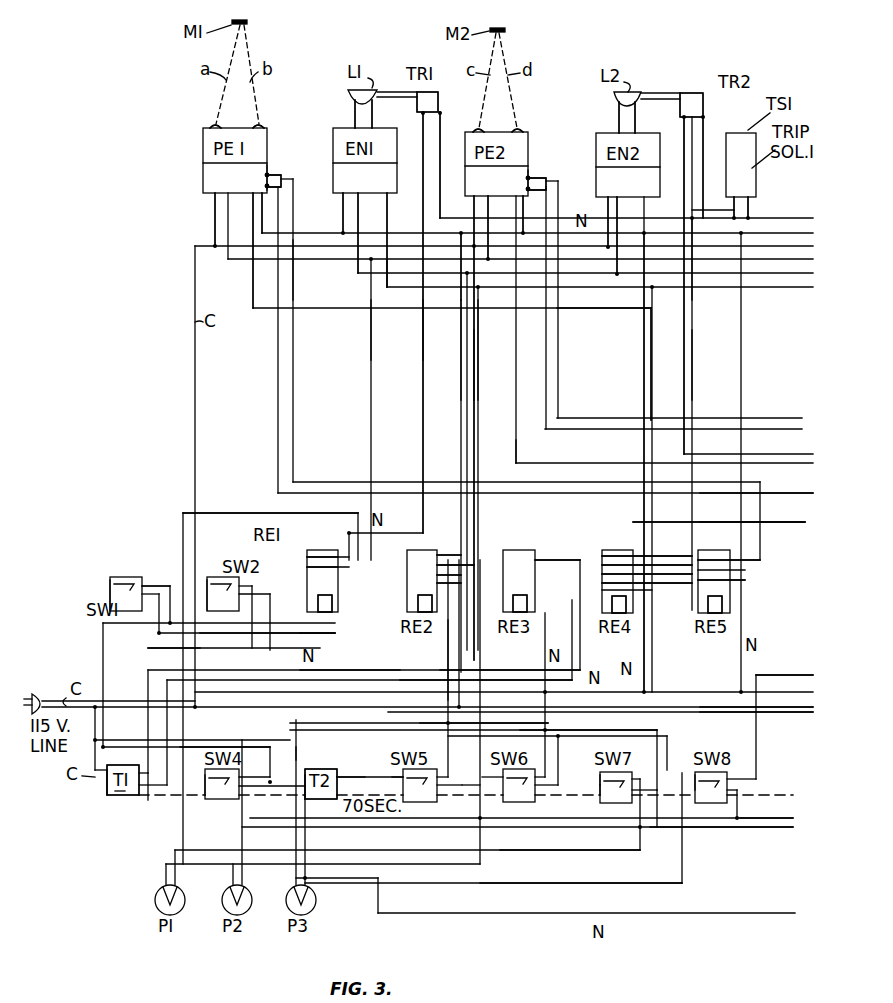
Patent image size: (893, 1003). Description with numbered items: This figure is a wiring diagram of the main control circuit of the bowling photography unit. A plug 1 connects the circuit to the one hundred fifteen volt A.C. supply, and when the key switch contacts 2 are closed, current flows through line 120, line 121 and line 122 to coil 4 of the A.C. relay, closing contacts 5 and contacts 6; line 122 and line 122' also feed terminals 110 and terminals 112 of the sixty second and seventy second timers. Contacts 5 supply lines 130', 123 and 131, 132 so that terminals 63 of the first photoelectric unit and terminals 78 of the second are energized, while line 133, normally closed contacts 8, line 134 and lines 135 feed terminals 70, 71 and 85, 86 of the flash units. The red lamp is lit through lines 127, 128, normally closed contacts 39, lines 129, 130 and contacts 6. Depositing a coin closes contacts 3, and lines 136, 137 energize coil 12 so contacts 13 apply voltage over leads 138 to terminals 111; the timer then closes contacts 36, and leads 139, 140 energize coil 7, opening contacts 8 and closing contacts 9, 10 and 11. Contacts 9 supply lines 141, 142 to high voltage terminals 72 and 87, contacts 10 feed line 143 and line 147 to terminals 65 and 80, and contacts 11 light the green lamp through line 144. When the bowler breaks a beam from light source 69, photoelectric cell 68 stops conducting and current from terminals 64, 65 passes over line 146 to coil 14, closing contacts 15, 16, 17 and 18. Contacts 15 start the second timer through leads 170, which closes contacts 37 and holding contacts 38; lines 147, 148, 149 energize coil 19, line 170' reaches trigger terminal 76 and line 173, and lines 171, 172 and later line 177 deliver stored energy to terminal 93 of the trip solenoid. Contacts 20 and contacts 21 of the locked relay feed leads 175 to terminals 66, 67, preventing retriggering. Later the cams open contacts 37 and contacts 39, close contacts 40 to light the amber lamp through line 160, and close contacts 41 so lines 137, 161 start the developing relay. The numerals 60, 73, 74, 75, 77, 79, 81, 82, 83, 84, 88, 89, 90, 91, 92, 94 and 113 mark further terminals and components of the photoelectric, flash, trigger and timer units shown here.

The plug 1 is at (33, 700).
The contacts 2 is at (110, 585).
The contacts 3 is at (207, 585).
The relay coil 4 is at (318, 603).
The contacts 5 is at (315, 570).
The contacts 6 is at (315, 558).
The relay coil 7 is at (415, 602).
The contacts 8 is at (420, 575).
The contacts 9 is at (420, 583).
The contacts 10 is at (420, 562).
The contacts 11 is at (418, 556).
The relay coil 12 is at (527, 602).
The contacts 13 is at (503, 560).
The relay coil 14 is at (605, 612).
The contacts 15 is at (602, 580).
The contacts 16 is at (602, 572).
The contacts 17 is at (602, 565).
The contacts 18 is at (602, 557).
The relay coil 19 is at (702, 614).
The contacts 20 is at (698, 580).
The contacts 21 is at (698, 560).
The contacts 36 is at (205, 780).
The contacts 37 is at (403, 777).
The contacts 38 is at (503, 777).
The contacts 39 is at (600, 790).
The contacts 40 is at (600, 778).
The contacts 41 is at (695, 779).
The timer period 60 is at (130, 795).
The terminals 63 is at (215, 201).
The terminal 64 is at (253, 197).
The terminal 65 is at (262, 198).
The terminal 66 is at (283, 180).
The terminal 67 is at (270, 173).
The photoelectric cell 68 is at (262, 126).
The light source 69 is at (212, 126).
The terminal 70 is at (343, 203).
The terminal 71 is at (358, 216).
The terminal 72 is at (387, 216).
The lamp lead 73 is at (355, 110).
The lamp lead 74 is at (372, 114).
The terminal 75 is at (417, 97).
The terminal 76 is at (423, 120).
The transformer lead 77 is at (442, 126).
The terminals 78 is at (474, 204).
The photocell lead 79 is at (505, 200).
The terminal 80 is at (524, 200).
The photocell terminal 81 is at (546, 184).
The photocell terminal 82 is at (530, 176).
The photocell input 83 is at (521, 128).
The photocell input 84 is at (486, 120).
The terminal 85 is at (608, 204).
The terminal 86 is at (617, 204).
The terminal 87 is at (644, 206).
The lamp lead 88 is at (619, 117).
The lamp lead 89 is at (635, 115).
The transformer 90 is at (680, 96).
The transformer lead 91 is at (684, 120).
The transformer lead 92 is at (703, 117).
The terminal 93 is at (748, 210).
The solenoid lead 94 is at (734, 207).
The terminals 110 is at (105, 787).
The terminals 111 is at (148, 795).
The terminals 112 is at (305, 790).
The timer terminal 113 is at (337, 778).
The line 120 is at (160, 648).
The line 121 is at (150, 590).
The line 122 is at (267, 645).
The line 122' is at (225, 732).
The line 123 is at (764, 705).
The line 127 is at (718, 827).
The line 128 is at (657, 810).
The line 129 is at (568, 858).
The line 130 is at (270, 504).
The line 130' is at (329, 649).
The line 131 is at (371, 328).
The line 132 is at (296, 262).
The line 133 is at (458, 683).
The line 134 is at (474, 368).
The lines 135 is at (387, 283).
The line 136 is at (494, 650).
The line 137 is at (770, 825).
The leads 138 is at (342, 672).
The lead 139 is at (296, 730).
The lead 140 is at (448, 650).
The line 141 is at (478, 340).
The line 142 is at (461, 282).
The line 143 is at (461, 350).
The line 144 is at (480, 723).
The line 146 is at (580, 312).
The line 147 is at (697, 244).
The line 148 is at (720, 535).
The line 149 is at (651, 394).
The line 160 is at (558, 890).
The line 161 is at (762, 675).
The leads 170 is at (588, 723).
The line 170' is at (406, 330).
The line 171 is at (762, 720).
The line 172 is at (692, 368).
The line 173 is at (766, 510).
The leads 175 is at (505, 495).
The line 177 is at (775, 524).